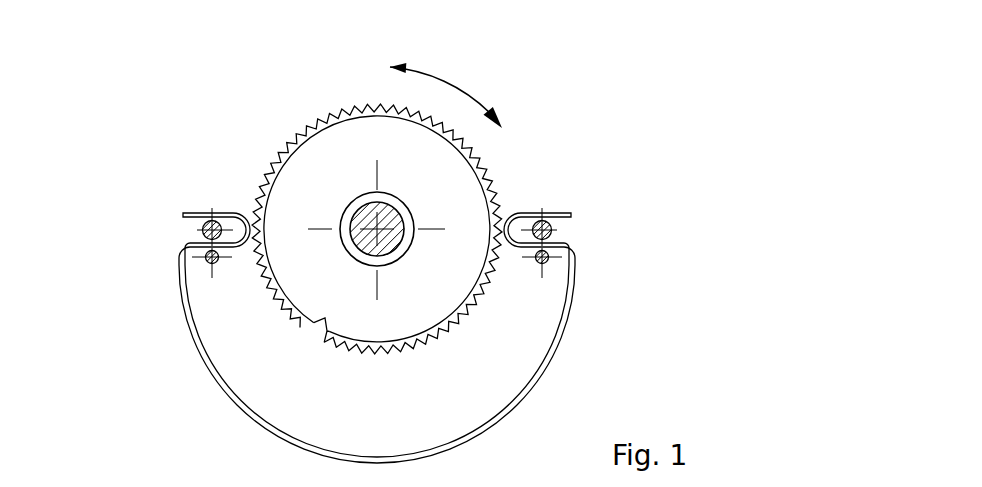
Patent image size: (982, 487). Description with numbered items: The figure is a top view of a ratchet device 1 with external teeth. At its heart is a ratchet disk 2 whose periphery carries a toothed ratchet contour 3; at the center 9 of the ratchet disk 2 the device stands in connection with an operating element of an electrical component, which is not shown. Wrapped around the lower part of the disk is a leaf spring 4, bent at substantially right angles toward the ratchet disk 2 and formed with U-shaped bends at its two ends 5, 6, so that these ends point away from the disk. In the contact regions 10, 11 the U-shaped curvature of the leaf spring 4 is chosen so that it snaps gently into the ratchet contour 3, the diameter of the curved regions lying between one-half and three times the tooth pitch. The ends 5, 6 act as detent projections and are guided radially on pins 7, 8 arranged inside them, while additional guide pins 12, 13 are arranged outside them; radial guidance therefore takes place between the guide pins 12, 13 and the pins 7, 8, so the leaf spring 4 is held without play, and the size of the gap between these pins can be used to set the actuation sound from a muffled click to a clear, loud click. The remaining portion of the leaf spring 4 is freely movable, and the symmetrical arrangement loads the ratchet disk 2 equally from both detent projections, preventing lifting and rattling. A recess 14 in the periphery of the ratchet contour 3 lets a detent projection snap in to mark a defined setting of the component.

The ratchet device 1 is at (258, 94).
The ratchet disk 2 is at (446, 193).
The ratchet contour 3 is at (488, 175).
The leaf spring 4 is at (550, 363).
The end of leaf spring 5 is at (571, 213).
The end of leaf spring 6 is at (183, 212).
The pin 7 is at (551, 232).
The pin 8 is at (203, 230).
The center of ratchet disk 9 is at (368, 217).
The contact region 10 is at (518, 213).
The contact region 11 is at (236, 212).
The guide pin 12 is at (548, 261).
The guide pin 13 is at (208, 258).
The recess 14 is at (325, 318).